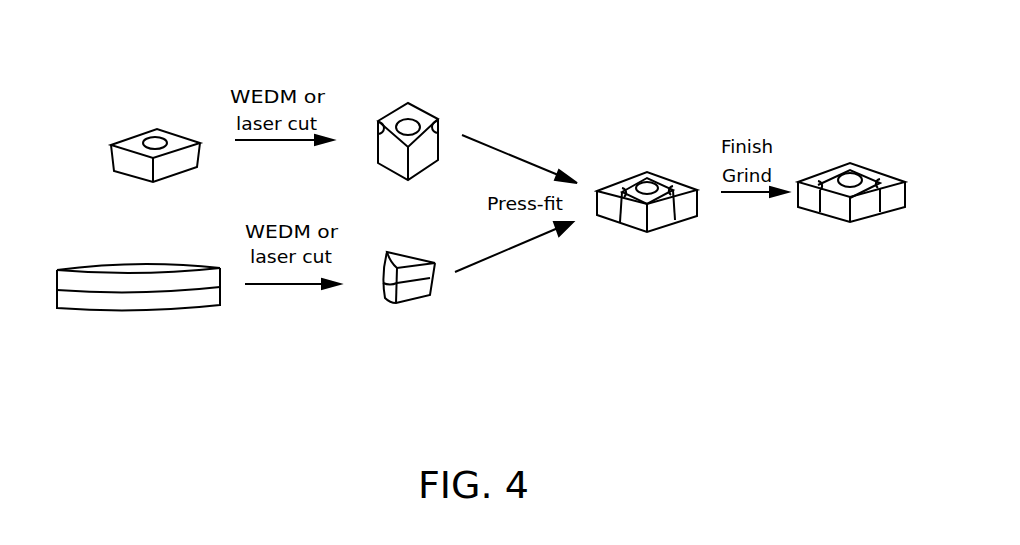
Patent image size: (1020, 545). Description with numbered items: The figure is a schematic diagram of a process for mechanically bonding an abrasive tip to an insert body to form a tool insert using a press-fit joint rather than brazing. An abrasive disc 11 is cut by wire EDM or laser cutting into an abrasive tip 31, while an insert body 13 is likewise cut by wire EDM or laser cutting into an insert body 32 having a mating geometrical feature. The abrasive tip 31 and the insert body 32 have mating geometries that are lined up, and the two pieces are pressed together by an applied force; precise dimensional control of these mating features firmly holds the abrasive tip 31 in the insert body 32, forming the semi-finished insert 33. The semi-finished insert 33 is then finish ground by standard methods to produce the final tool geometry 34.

The abrasive disc 11 is at (138, 267).
The insert body 13 is at (155, 136).
The abrasive tip 31 is at (417, 261).
The insert body 32 is at (424, 127).
The semi-finished insert 33 is at (647, 184).
The final tool geometry 34 is at (856, 174).